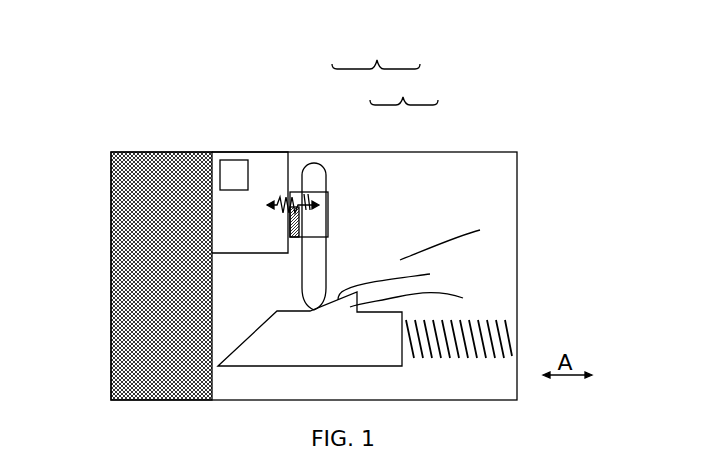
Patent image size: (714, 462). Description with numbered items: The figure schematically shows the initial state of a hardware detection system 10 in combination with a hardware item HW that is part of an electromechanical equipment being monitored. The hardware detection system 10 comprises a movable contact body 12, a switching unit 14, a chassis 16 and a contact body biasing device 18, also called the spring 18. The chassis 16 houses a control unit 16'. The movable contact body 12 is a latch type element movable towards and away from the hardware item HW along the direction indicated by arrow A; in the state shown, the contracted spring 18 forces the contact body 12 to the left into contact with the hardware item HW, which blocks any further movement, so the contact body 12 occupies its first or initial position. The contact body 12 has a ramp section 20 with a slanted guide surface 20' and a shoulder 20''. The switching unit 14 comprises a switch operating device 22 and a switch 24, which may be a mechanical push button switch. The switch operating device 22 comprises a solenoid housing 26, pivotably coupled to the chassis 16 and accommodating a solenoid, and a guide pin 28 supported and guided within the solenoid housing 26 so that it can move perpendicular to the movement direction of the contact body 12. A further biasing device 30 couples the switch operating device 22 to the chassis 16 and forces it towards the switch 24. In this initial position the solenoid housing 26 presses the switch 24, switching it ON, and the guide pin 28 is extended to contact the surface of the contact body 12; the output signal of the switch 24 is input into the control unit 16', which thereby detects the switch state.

The hardware detection system 10 is at (500, 134).
The hardware item HW is at (125, 255).
The movable contact body 12 is at (360, 354).
The switching unit 14 is at (376, 49).
The chassis 16 is at (251, 174).
The control unit 16' is at (230, 143).
The contact body biasing device 18 is at (487, 343).
The ramp section 20 is at (462, 300).
The slanted guide surface 20' is at (484, 231).
The shoulder 20'' is at (469, 278).
The switch operating device 22 is at (404, 86).
The switch 24 is at (298, 214).
The solenoid housing 26 is at (331, 226).
The guide pin 28 is at (328, 278).
The further biasing device 30 is at (305, 190).